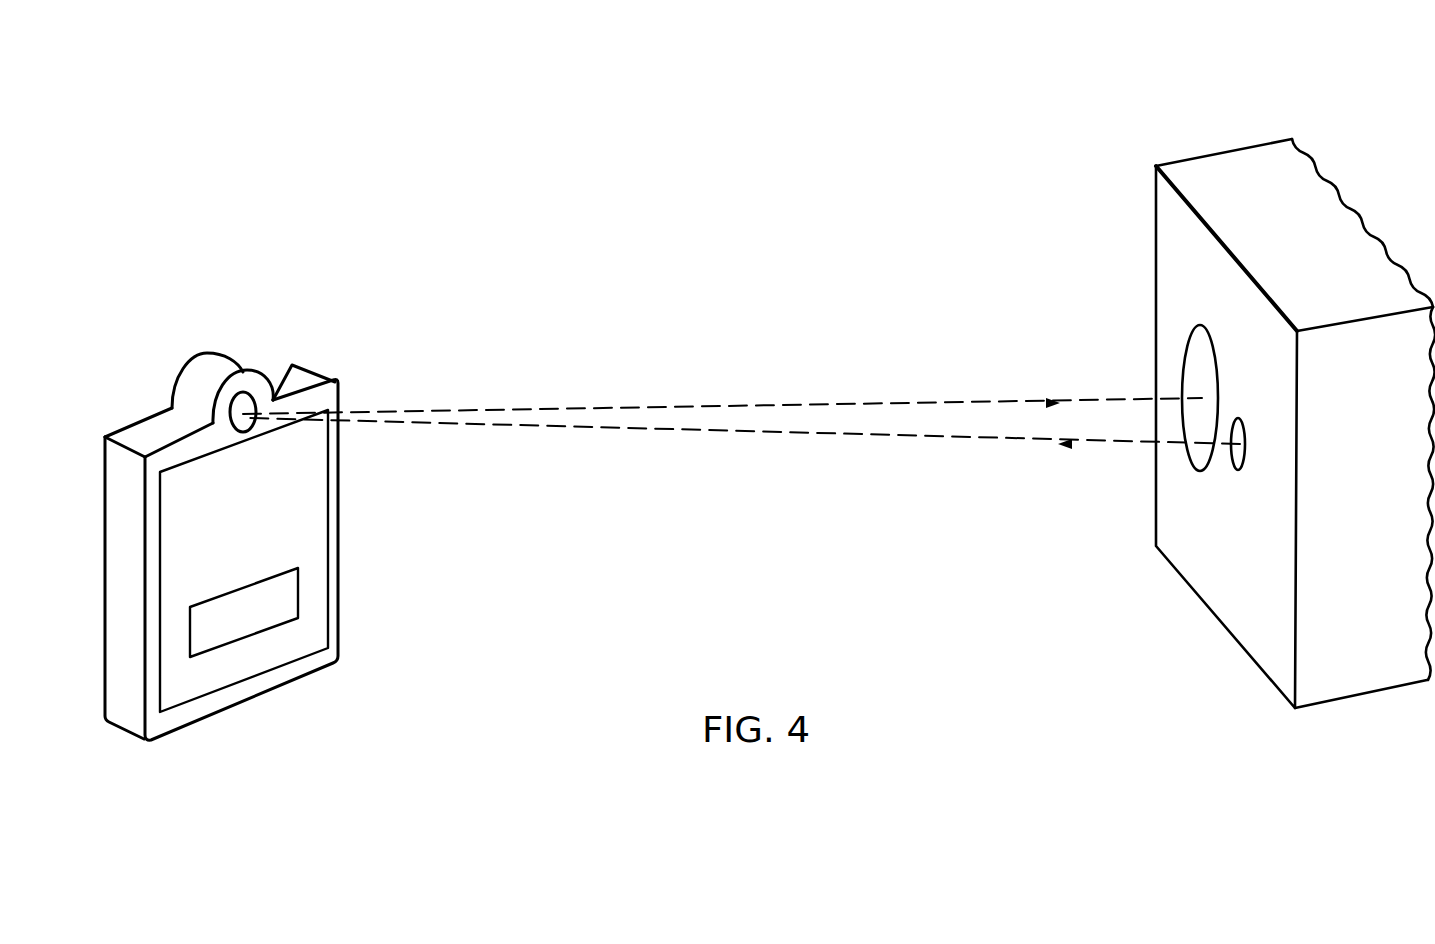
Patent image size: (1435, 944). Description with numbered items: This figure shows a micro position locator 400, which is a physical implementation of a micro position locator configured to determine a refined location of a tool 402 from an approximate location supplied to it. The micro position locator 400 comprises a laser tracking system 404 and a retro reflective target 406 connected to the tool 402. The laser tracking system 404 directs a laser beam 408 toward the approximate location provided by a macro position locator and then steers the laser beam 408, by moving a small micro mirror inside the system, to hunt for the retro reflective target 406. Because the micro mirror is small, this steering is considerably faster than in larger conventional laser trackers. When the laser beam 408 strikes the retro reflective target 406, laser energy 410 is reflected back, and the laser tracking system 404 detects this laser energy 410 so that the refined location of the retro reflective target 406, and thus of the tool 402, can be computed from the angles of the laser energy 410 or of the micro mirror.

The micro position locator 400 is at (264, 105).
The tool 402 is at (136, 410).
The laser tracking system 404 is at (1198, 151).
The retro reflective target 406 is at (253, 388).
The laser beam 408 is at (991, 443).
The laser energy 410 is at (718, 403).